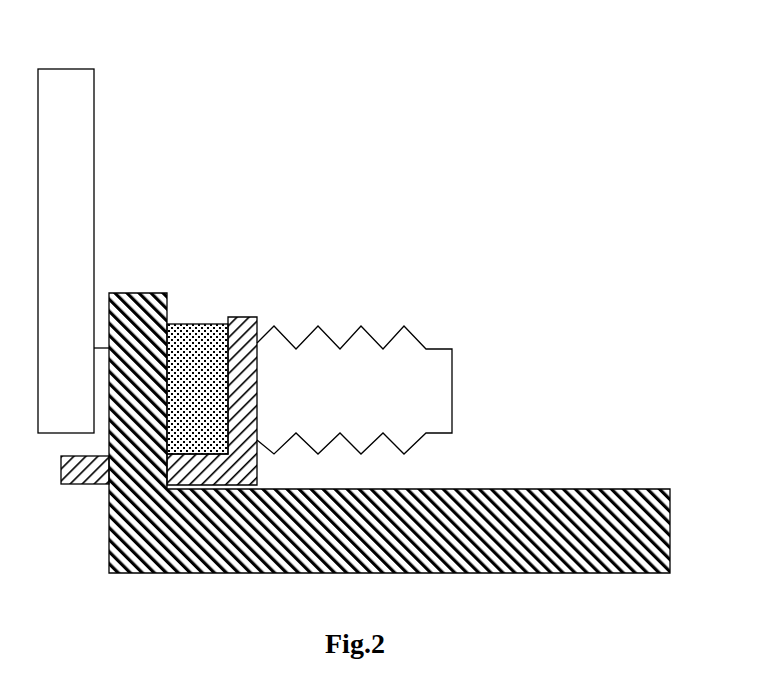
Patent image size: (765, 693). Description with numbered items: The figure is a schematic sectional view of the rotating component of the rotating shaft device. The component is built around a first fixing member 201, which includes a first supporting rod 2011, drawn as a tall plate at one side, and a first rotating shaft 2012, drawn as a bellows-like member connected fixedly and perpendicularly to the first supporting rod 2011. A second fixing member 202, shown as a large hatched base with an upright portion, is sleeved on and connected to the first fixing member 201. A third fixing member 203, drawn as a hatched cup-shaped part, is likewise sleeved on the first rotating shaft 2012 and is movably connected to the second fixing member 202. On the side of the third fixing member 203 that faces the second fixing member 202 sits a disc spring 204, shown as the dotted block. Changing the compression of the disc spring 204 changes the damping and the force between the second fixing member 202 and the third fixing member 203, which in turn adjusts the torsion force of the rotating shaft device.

The first fixing member 201 is at (245, 232).
The first supporting rod 2011 is at (80, 147).
The first rotating shaft 2012 is at (333, 336).
The second fixing member 202 is at (601, 489).
The third fixing member 203 is at (238, 316).
The disc spring 204 is at (192, 323).